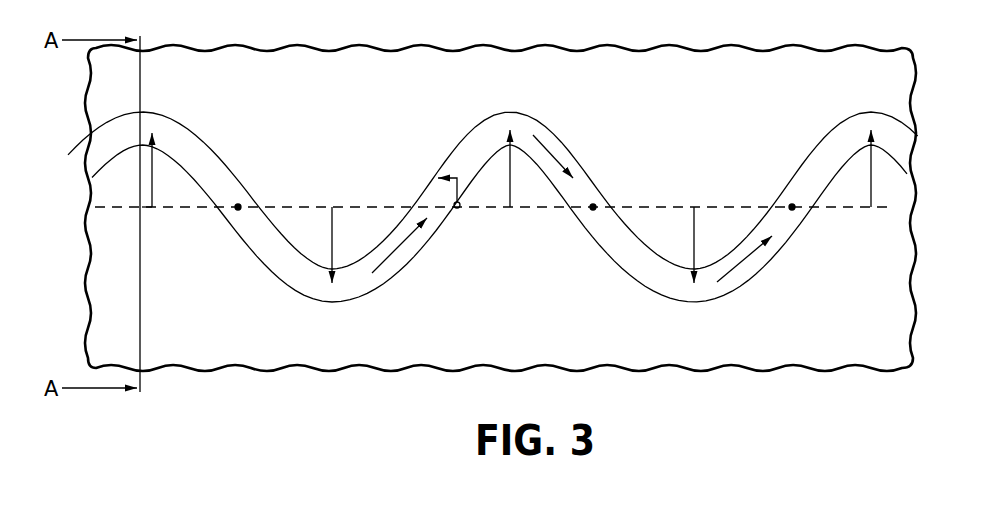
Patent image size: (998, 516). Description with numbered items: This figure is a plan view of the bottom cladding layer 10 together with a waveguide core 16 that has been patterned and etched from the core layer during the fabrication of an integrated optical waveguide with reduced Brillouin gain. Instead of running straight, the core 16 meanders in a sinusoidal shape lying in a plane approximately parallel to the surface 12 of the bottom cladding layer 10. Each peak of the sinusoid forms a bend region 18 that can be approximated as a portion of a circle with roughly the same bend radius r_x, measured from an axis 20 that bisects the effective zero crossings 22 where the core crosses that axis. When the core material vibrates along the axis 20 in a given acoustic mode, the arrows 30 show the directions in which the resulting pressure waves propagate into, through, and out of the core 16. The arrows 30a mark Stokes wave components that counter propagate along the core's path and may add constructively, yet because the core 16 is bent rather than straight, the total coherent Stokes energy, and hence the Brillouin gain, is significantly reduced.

The bottom cladding layer 10 is at (917, 90).
The surface 12 is at (121, 281).
The core 16 is at (587, 162).
The bend regions 18 is at (157, 93).
The axis 20 is at (893, 207).
The effective zero crossings 22 is at (239, 204).
The arrows 30 is at (168, 178).
The arrows 30a is at (183, 143).